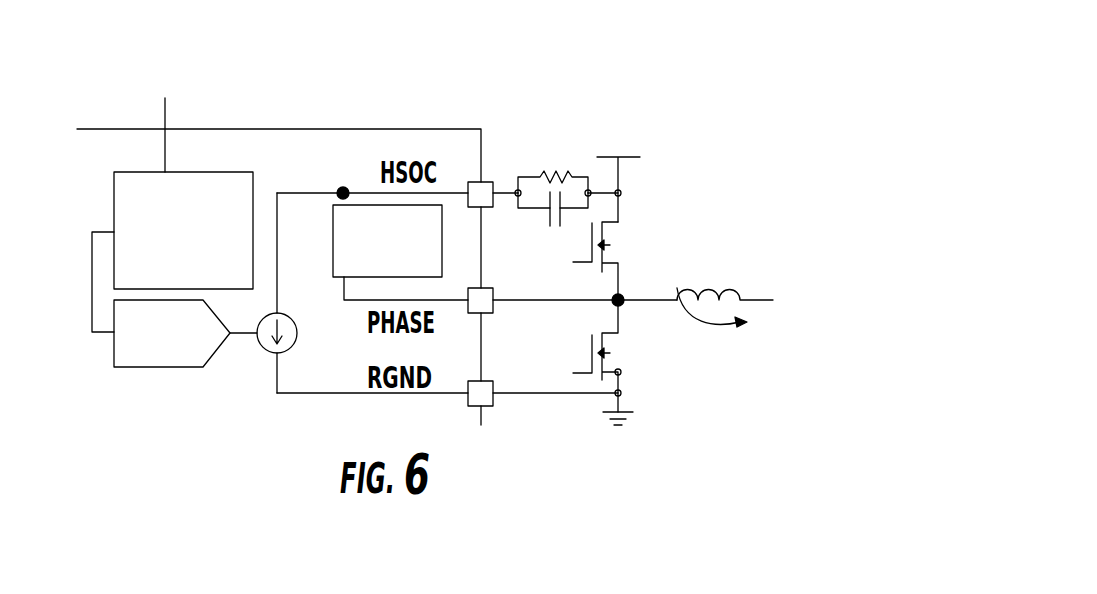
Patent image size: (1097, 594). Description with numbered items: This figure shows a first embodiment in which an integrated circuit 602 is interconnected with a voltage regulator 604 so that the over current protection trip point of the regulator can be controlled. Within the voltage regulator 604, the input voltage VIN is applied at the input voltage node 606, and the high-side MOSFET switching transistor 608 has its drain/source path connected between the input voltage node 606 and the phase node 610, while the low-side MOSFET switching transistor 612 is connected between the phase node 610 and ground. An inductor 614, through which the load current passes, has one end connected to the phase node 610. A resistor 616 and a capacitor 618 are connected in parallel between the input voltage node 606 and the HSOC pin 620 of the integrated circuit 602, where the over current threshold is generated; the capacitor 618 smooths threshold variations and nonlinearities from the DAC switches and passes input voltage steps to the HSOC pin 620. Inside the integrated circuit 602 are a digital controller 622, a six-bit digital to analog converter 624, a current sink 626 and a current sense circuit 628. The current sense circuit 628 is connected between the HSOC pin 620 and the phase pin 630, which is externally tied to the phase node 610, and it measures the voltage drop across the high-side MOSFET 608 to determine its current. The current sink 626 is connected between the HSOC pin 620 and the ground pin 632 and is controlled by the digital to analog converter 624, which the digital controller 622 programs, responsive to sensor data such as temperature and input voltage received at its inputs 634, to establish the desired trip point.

The integrated circuit 602 is at (182, 128).
The voltage regulator 604 is at (731, 136).
The input voltage node 606 is at (614, 200).
The high-side MOSFET switching transistor 608 is at (612, 221).
The phase node 610 is at (616, 298).
The low-side MOSFET switching transistor 612 is at (590, 352).
The inductor 614 is at (745, 290).
The resistor 616 is at (553, 175).
The capacitor 618 is at (565, 204).
The HSOC pin 620 is at (470, 183).
The digital controller 622 is at (112, 207).
The 6-bit digital to analog converter 624 is at (222, 183).
The current sink 626 is at (261, 348).
The current sense circuit 628 is at (333, 252).
The phase pin 630 is at (491, 290).
The ground pin 632 is at (492, 402).
The inputs 634 is at (164, 110).